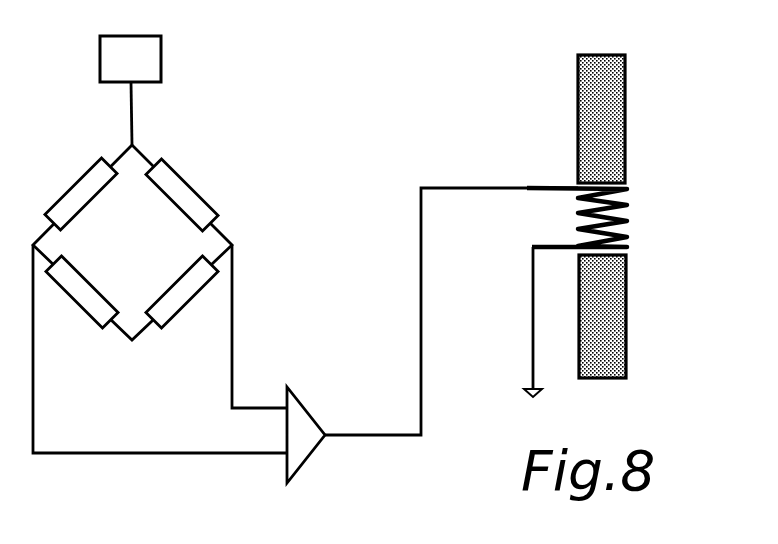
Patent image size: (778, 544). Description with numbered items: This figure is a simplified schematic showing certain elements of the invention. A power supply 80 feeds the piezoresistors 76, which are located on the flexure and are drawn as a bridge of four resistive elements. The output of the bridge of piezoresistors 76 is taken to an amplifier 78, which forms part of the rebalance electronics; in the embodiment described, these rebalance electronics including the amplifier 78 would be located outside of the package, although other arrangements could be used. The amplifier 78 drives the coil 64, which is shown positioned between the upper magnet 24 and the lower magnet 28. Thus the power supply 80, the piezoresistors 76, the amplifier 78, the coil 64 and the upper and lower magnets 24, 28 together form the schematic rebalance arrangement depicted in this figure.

The upper magnet 24 is at (625, 128).
The lower magnet 28 is at (626, 355).
The coil 64 is at (627, 232).
The piezoresistors 76 is at (163, 198).
The amplifier 78 is at (302, 404).
The power supply 80 is at (161, 58).